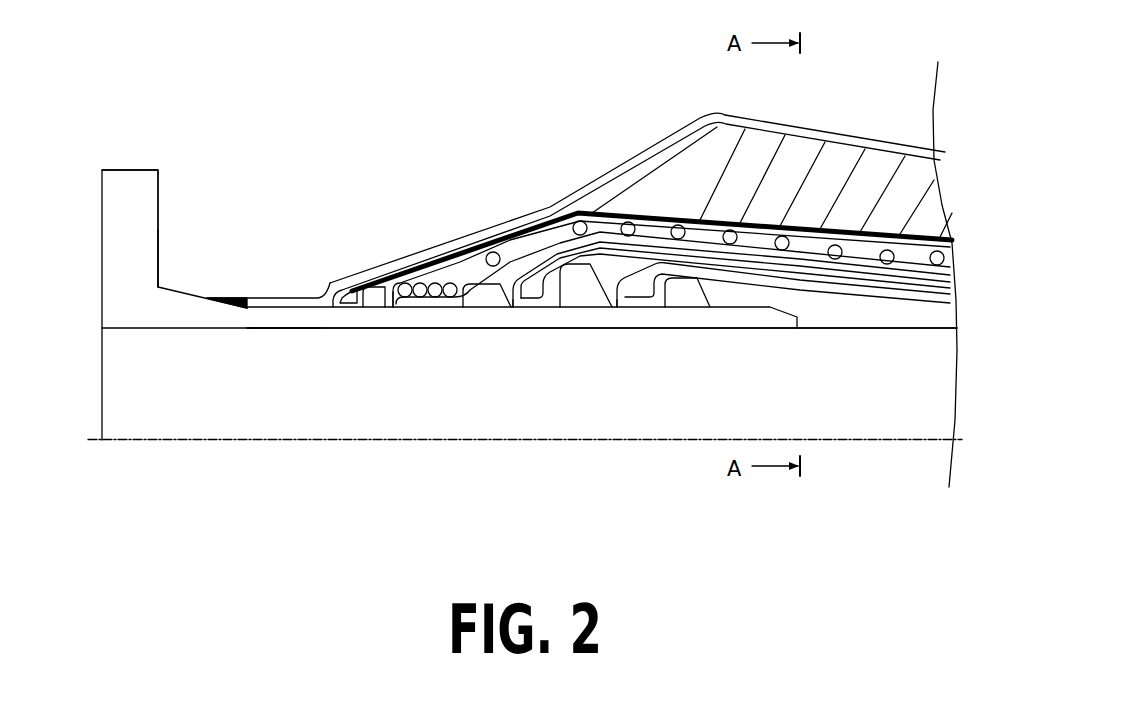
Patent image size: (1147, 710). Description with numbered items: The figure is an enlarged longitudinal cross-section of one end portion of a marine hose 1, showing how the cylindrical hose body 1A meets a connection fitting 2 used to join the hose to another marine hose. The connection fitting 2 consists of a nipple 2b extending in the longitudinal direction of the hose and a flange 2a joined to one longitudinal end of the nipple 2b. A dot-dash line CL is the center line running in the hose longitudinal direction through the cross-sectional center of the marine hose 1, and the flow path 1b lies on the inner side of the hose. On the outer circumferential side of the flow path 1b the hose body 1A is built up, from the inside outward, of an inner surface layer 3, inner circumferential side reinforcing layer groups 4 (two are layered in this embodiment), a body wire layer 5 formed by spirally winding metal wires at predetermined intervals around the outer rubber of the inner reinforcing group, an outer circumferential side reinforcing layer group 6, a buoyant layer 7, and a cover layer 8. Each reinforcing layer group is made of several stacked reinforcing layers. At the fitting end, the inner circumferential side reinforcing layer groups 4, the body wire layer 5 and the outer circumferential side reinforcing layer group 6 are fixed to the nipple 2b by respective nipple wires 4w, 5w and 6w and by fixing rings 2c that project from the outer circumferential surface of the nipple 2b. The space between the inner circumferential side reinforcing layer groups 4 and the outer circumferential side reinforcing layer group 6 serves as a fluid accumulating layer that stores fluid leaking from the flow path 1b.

The marine hose 1 is at (410, 157).
The hose body 1A is at (881, 146).
The flow path 1b is at (298, 327).
The connection fitting 2 is at (138, 168).
The flange 2a is at (152, 252).
The nipple 2b is at (522, 330).
The fixing ring 2c is at (378, 308).
The inner surface layer 3 is at (908, 320).
The inner circumferential side reinforcing layer group 4 is at (740, 284).
The nipple wire 4w is at (537, 302).
The body wire layer 5 is at (530, 232).
The nipple wire 5w is at (426, 300).
The outer circumferential side reinforcing layer group 6 is at (640, 209).
The nipple wire 6w is at (350, 306).
The buoyant layer 7 is at (677, 162).
The cover layer 8 is at (843, 136).
The center line CL is at (203, 444).